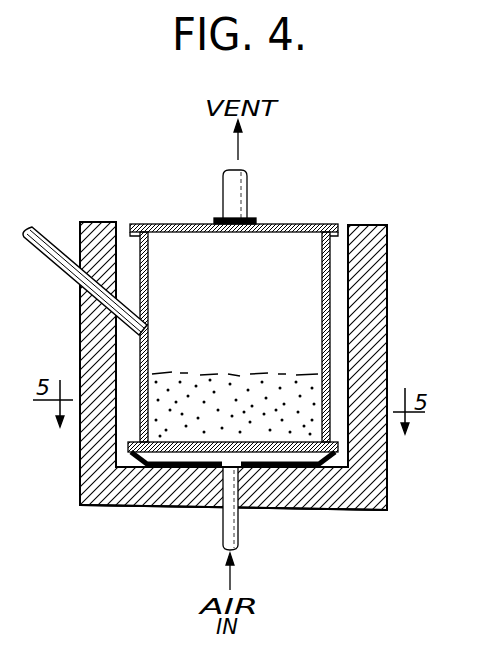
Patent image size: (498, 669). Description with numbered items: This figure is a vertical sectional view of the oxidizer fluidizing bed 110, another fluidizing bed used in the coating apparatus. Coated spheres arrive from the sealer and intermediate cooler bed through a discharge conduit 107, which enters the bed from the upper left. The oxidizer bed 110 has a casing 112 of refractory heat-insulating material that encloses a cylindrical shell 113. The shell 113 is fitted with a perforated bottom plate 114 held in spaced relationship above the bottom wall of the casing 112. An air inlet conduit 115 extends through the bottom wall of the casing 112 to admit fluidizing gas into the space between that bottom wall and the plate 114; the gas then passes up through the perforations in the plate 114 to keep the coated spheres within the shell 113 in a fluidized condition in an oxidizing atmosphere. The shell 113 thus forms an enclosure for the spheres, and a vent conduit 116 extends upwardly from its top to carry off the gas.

The discharge conduit 107 is at (43, 226).
The oxidizer fluidizing bed 110 is at (394, 250).
The casing 112 is at (387, 466).
The cylindrical shell 113 is at (330, 307).
The perforated bottom plate 114 is at (188, 452).
The air inlet conduit 115 is at (239, 537).
The vent conduit 116 is at (248, 181).